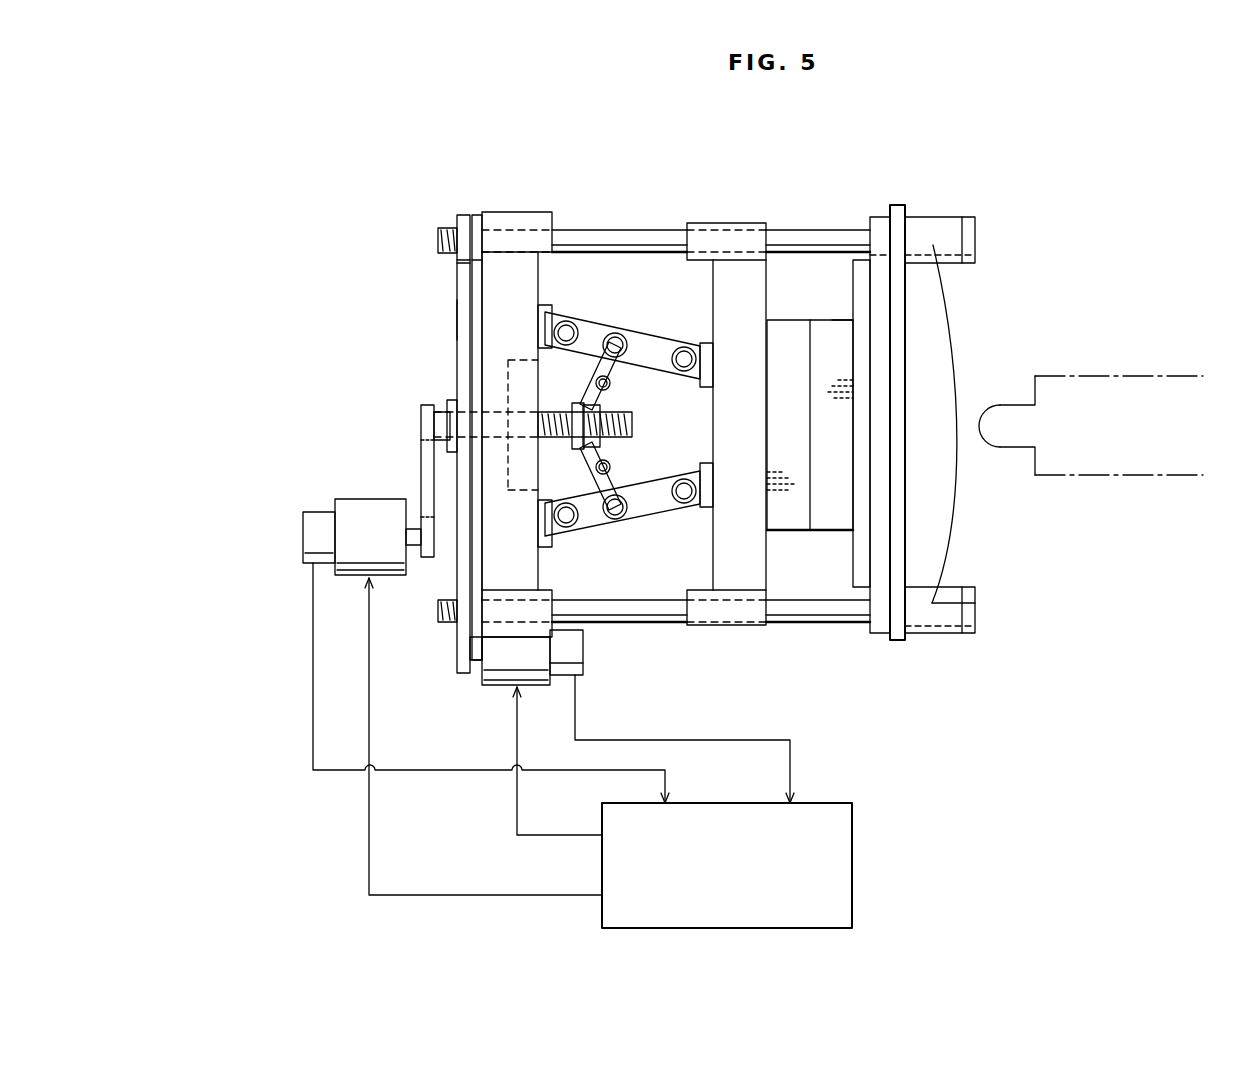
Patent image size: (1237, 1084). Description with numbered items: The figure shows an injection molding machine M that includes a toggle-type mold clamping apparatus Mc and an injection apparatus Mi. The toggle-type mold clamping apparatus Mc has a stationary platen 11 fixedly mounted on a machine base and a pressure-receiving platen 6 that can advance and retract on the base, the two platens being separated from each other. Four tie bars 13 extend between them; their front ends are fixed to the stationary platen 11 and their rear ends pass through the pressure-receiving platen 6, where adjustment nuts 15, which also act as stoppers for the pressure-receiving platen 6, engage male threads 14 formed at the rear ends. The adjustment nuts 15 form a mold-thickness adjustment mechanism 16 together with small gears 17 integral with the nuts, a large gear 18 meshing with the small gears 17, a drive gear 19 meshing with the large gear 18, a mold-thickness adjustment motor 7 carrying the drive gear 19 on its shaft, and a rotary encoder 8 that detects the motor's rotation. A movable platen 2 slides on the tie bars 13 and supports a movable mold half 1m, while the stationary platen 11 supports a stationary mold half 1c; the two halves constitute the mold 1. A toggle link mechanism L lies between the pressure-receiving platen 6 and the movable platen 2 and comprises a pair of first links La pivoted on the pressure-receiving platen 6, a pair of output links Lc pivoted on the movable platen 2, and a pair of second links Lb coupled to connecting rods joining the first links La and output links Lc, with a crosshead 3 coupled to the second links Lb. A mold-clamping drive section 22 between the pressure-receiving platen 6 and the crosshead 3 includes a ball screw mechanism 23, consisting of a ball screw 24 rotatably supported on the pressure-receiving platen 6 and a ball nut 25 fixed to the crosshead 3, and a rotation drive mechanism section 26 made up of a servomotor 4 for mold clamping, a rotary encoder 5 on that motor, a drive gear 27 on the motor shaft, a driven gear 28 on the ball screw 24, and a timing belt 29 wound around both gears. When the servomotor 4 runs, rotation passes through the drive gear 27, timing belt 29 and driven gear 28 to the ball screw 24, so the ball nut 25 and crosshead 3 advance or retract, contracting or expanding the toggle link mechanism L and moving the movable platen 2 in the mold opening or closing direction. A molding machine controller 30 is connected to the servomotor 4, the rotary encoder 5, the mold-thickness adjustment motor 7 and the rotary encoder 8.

The mold 1 is at (815, 300).
The stationary mold half 1c is at (832, 320).
The movable mold half 1m is at (783, 533).
The movable platen 2 is at (725, 223).
The crosshead 3 is at (577, 403).
The servomotor for mold clamping 4 is at (348, 578).
The rotary encoder 5 is at (303, 553).
The pressure-receiving platen 6 is at (520, 212).
The mold-thickness adjustment motor 7 is at (484, 688).
The rotary encoder 8 is at (583, 670).
The stationary platen 11 is at (948, 530).
The tie bars 13 is at (833, 228).
The male threads 14 is at (440, 243).
The adjustment nuts 15 is at (474, 214).
The mold-thickness adjustment mechanism 16 is at (370, 262).
The small gears 17 is at (466, 214).
The large gear 18 is at (458, 318).
The drive gear 19 is at (457, 665).
The mold-clamping drive section 22 is at (283, 410).
The ball screw mechanism 23 is at (570, 465).
The ball screw 24 is at (633, 425).
The ball nut 25 is at (565, 408).
The rotation drive mechanism section 26 is at (325, 470).
The drive gear 27 is at (420, 528).
The driven gear 28 is at (421, 420).
The timing belt 29 is at (420, 467).
The molding machine controller 30 is at (853, 872).
The toggle link mechanism L is at (650, 572).
The first links La is at (585, 326).
The second links Lb is at (623, 377).
The output links Lc is at (655, 332).
The injection molding machine M is at (1100, 220).
The toggle-type mold clamping apparatus Mc is at (968, 195).
The injection apparatus Mi is at (1128, 372).